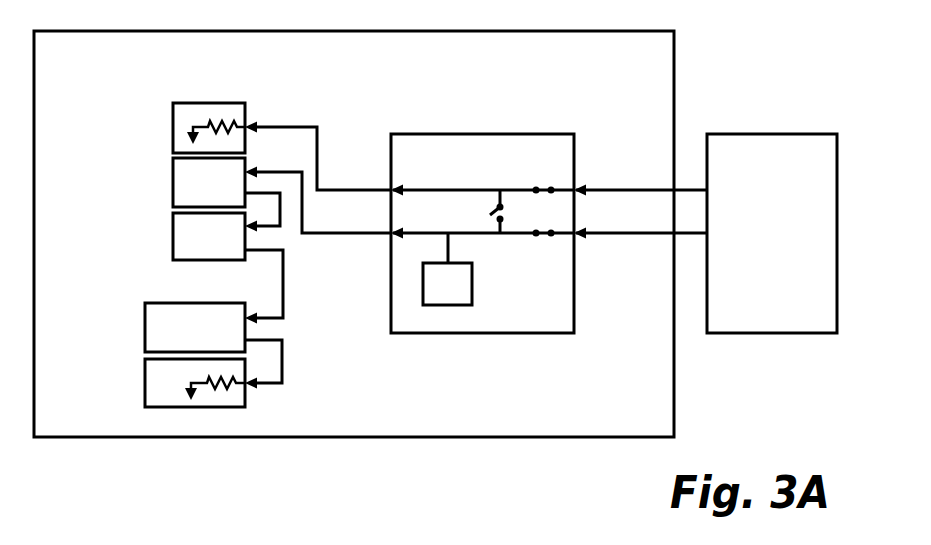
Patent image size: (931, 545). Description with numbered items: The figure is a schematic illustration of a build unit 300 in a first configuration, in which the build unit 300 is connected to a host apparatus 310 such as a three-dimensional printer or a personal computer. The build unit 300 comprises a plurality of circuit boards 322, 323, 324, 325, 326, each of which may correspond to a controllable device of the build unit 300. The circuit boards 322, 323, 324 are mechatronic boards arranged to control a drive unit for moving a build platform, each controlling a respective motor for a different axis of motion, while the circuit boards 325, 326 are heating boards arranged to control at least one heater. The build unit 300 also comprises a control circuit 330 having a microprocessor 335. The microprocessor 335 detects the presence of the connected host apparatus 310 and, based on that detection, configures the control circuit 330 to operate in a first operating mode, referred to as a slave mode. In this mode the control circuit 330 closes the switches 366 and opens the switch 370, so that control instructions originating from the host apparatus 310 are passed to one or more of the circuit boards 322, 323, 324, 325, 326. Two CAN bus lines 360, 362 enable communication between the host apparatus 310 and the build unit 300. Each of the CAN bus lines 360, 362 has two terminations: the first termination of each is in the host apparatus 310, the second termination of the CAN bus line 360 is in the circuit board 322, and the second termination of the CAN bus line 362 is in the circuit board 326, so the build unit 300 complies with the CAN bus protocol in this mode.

The build unit 300 is at (375, 82).
The host apparatus 310 is at (792, 248).
The circuit board 322 is at (173, 128).
The circuit board 323 is at (173, 183).
The circuit board 324 is at (173, 237).
The circuit board 325 is at (145, 327).
The circuit board 326 is at (145, 380).
The control circuit 330 is at (513, 134).
The microprocessor 335 is at (472, 286).
The CAN bus line 360 is at (613, 188).
The CAN bus line 362 is at (631, 235).
The switches 366 is at (534, 230).
The switch 370 is at (495, 205).